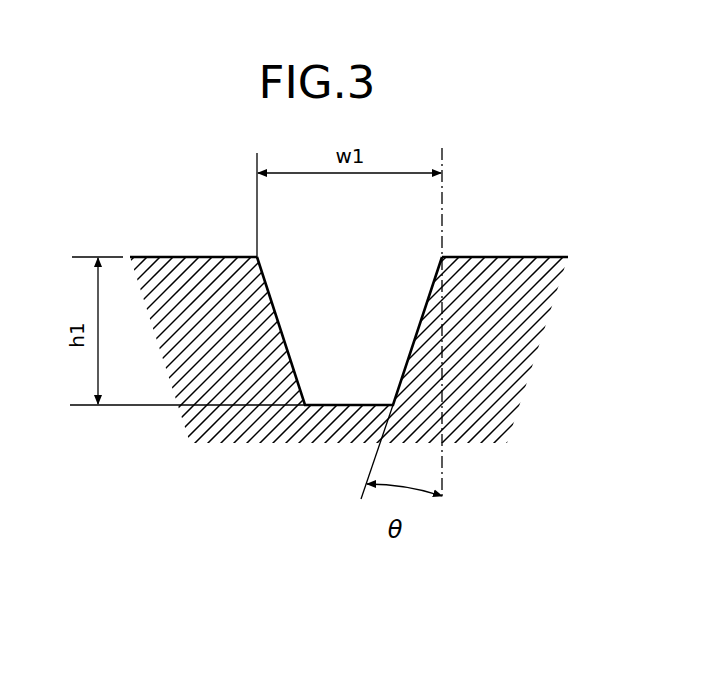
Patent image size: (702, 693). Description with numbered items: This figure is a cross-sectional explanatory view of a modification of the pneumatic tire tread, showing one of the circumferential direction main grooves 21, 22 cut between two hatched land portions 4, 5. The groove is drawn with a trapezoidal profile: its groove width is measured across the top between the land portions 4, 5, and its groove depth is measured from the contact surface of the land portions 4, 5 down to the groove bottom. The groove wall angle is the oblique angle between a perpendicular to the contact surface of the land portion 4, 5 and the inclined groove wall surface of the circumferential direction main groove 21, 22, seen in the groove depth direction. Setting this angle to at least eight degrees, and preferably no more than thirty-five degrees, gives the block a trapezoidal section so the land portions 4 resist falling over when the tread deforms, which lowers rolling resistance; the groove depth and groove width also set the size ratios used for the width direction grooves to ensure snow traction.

The land portion 4 is at (500, 266).
The land portion 5 is at (194, 268).
The circumferential direction main groove 21 is at (349, 307).
The circumferential direction main groove 22 is at (349, 288).